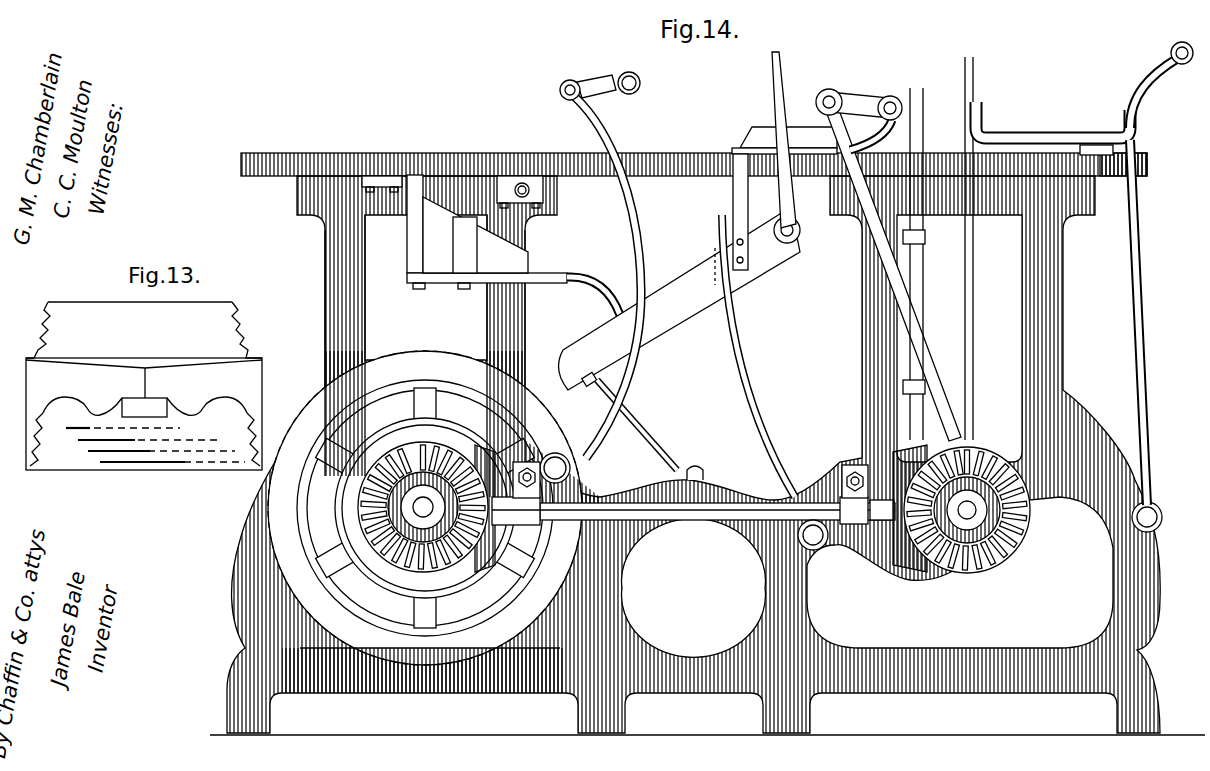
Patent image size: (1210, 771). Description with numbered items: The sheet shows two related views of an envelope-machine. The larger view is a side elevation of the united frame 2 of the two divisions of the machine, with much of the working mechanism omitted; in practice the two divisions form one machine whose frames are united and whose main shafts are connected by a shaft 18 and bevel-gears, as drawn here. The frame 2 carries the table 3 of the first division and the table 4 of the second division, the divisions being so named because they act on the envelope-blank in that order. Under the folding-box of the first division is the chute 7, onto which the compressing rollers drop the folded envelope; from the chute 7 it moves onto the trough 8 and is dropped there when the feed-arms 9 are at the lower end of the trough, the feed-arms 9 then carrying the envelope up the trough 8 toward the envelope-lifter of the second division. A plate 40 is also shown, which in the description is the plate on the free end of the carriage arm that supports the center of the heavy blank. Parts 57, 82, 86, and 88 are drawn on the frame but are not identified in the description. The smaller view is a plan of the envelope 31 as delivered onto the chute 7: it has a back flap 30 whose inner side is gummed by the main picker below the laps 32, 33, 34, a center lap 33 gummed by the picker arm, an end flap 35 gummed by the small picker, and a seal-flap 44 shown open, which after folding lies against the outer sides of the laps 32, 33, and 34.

In FIG. 14, the frame 2 is at (352, 311).
In FIG. 14, the table 3 is at (681, 164).
In FIG. 14, the table 4 is at (1147, 165).
In FIG. 14, the chute 7 is at (572, 286).
In FIG. 14, the trough 8 is at (679, 346).
In FIG. 14, the feed-arms 9 is at (748, 377).
In FIG. 14, the shaft 18 is at (706, 515).
In FIG. 14, the plate 40 is at (636, 229).
In FIG. 14, the connecting rod 57 is at (916, 326).
In FIG. 14, the hand lever 82 is at (776, 168).
In FIG. 14, the rod 86 is at (1151, 322).
In FIG. 14, the hand lever 88 is at (1125, 96).
In FIG. 13, the back flap 30 is at (144, 414).
In FIG. 13, the envelope 31 is at (240, 330).
In FIG. 13, the lap 32 is at (76, 422).
In FIG. 13, the center lap 33 is at (135, 406).
In FIG. 13, the lap 34 is at (213, 422).
In FIG. 13, the end flap 35 is at (175, 368).
In FIG. 13, the seal-flap 44 is at (144, 335).